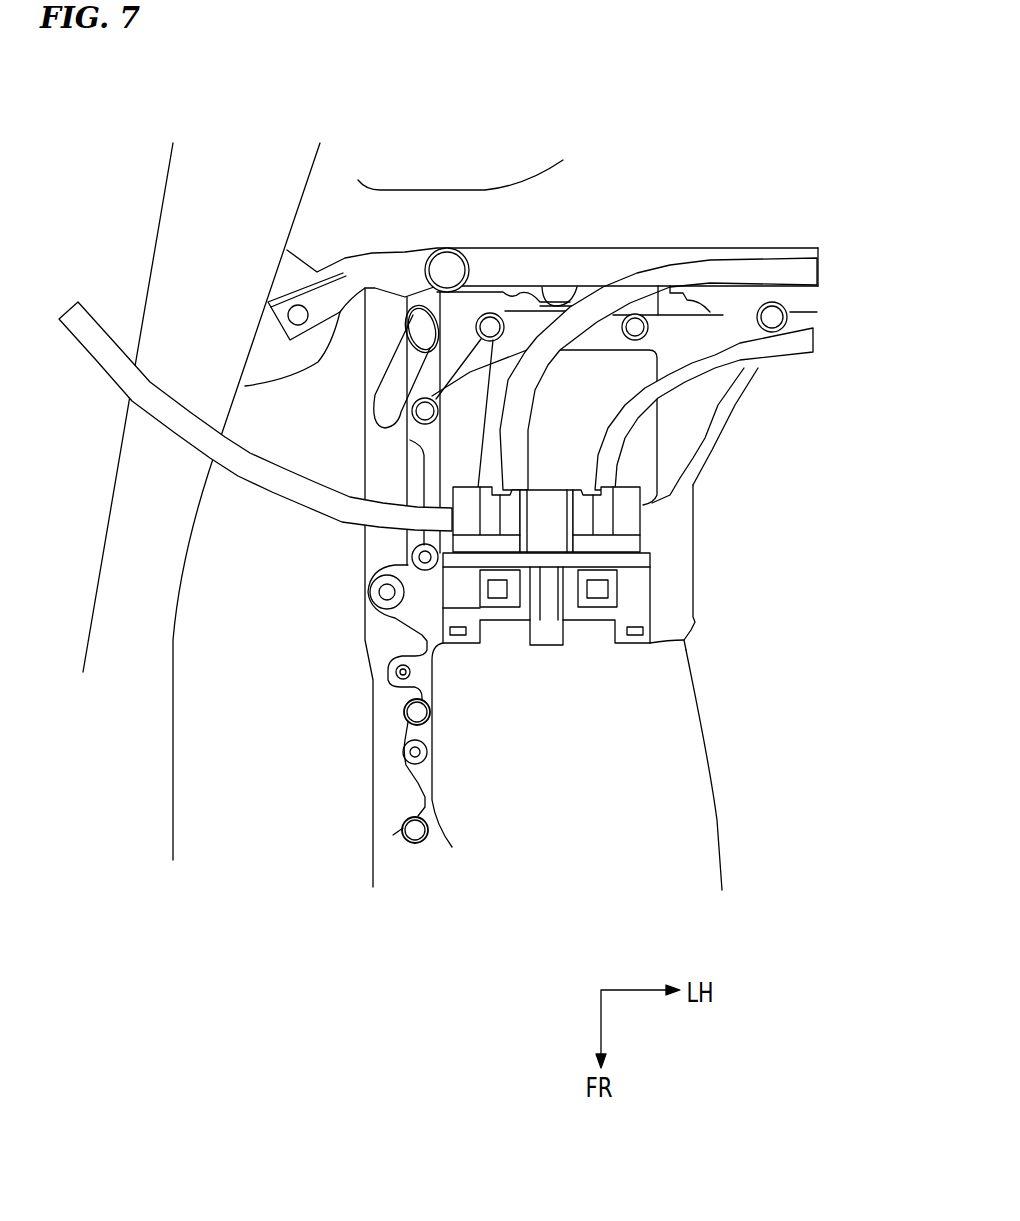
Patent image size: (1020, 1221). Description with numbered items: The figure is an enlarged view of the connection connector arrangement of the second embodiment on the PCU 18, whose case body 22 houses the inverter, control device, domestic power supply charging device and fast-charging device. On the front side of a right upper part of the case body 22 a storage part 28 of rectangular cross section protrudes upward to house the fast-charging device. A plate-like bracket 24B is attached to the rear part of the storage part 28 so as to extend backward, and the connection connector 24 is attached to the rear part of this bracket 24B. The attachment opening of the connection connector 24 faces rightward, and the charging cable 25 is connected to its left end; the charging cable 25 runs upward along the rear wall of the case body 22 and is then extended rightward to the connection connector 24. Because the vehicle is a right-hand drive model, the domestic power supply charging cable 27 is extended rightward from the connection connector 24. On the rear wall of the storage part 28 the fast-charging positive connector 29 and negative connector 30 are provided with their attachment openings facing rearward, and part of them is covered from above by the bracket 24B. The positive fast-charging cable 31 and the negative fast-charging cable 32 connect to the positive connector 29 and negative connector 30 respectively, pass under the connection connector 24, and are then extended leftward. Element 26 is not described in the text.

The PCU 18 is at (822, 758).
The case body 22 is at (594, 587).
The connection connector 24 is at (633, 518).
The bracket 24B is at (508, 620).
The charging cable 25 is at (710, 417).
The wire harness 26 is at (470, 488).
The domestic power supply charging cable 27 is at (300, 492).
The storage part 28 is at (567, 803).
The positive connector 29 is at (442, 597).
The negative connector 30 is at (637, 585).
The positive fast-charging cable 31 is at (670, 268).
The negative fast-charging cable 32 is at (735, 352).